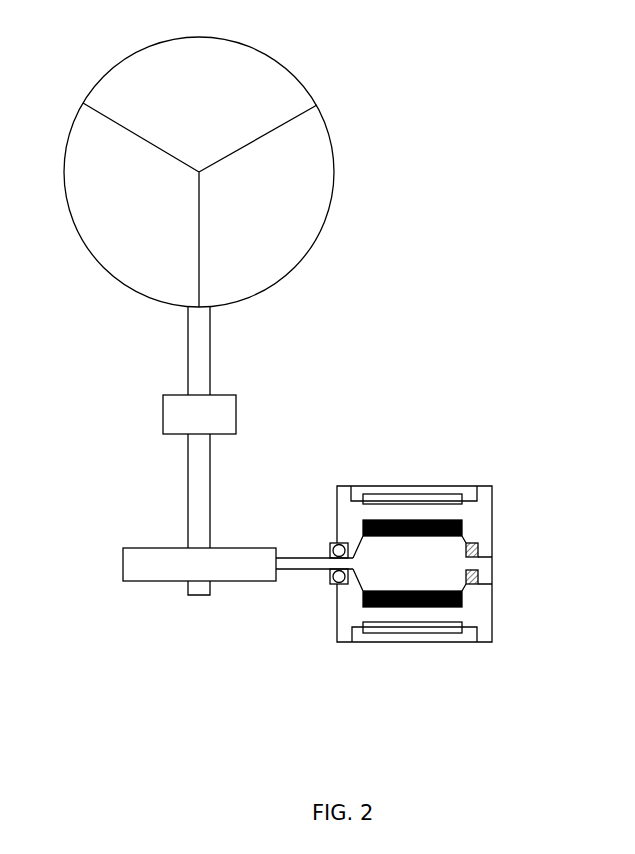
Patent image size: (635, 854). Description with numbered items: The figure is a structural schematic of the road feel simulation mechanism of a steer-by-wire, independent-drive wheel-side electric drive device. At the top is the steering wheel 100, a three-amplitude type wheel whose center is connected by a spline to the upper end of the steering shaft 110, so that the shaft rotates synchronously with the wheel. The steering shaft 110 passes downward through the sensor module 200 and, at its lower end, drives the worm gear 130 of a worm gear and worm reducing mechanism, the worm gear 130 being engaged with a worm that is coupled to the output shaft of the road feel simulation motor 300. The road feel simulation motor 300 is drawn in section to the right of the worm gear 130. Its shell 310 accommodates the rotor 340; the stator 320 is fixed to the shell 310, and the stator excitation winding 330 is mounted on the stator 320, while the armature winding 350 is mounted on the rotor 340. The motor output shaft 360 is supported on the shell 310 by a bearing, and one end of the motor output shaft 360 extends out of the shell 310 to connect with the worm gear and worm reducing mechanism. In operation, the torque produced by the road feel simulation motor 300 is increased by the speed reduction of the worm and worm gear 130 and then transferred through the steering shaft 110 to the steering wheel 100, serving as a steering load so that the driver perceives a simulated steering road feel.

The steering wheel 100 is at (260, 215).
The steering shaft 110 is at (206, 350).
The sensor module 200 is at (211, 415).
The worm gear 130 is at (210, 559).
The road feel simulation motor 300 is at (445, 504).
The shell 310 is at (441, 485).
The stator 320 is at (458, 490).
The stator excitation winding 330 is at (458, 498).
The rotor 340 is at (420, 550).
The armature winding 350 is at (435, 592).
The motor output shaft 360 is at (313, 567).